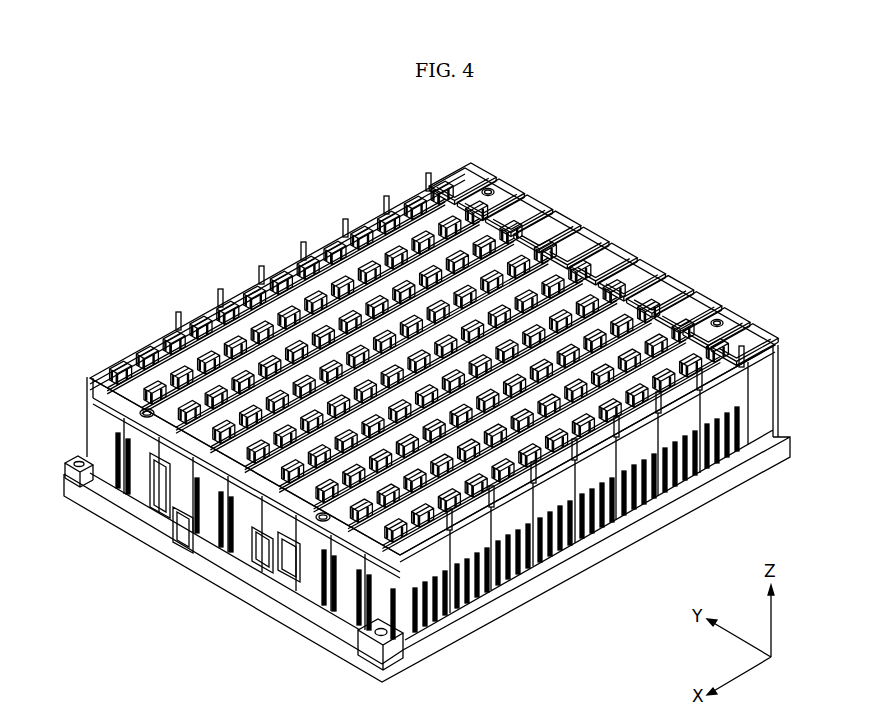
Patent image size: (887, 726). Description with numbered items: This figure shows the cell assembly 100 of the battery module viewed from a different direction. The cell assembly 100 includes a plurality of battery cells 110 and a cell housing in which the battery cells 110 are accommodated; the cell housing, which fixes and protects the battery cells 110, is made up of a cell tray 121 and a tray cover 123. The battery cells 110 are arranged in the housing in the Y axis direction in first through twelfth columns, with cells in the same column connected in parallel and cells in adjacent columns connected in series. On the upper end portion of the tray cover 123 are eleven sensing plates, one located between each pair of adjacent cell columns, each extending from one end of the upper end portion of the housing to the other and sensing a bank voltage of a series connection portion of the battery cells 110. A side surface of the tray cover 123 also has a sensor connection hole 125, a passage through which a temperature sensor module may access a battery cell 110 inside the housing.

The cell assembly 100 is at (156, 172).
The battery cell 110 is at (162, 488).
The cell tray 121 is at (93, 503).
The tray cover 123 is at (93, 437).
The sensor connection hole 125 is at (157, 474).